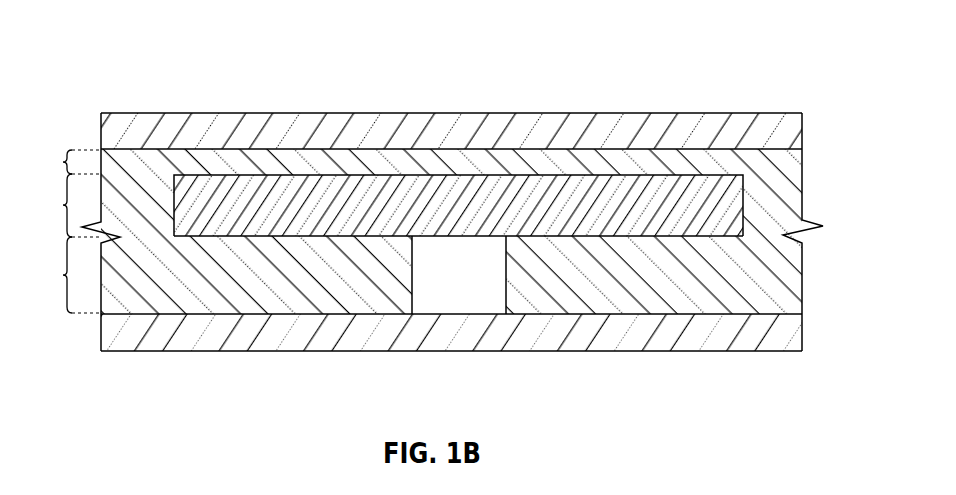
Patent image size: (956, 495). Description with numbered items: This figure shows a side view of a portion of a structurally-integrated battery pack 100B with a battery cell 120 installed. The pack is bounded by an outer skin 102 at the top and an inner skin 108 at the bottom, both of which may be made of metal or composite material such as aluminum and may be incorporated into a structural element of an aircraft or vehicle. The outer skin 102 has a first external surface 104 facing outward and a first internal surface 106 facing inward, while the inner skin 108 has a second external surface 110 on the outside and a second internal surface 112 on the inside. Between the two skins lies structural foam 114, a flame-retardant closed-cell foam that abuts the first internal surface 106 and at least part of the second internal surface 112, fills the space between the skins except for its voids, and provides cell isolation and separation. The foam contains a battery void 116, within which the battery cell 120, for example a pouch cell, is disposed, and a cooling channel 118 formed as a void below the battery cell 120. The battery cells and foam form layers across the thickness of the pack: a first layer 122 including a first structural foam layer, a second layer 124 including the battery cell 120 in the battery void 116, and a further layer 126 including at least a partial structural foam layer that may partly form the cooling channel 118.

The structurally-integrated battery pack 100B is at (117, 60).
The outer skin 102 is at (788, 130).
The first external surface 104 is at (675, 112).
The first internal surface 106 is at (748, 152).
The inner skin 108 is at (790, 330).
The second external surface 110 is at (728, 352).
The second internal surface 112 is at (658, 312).
The structural foam 114 is at (782, 277).
The battery void 116 is at (745, 237).
The cooling channel 118 is at (495, 277).
The battery cell 120 is at (607, 192).
The first layer 122 is at (63, 162).
The second layer 124 is at (61, 205).
The lower portion thickness 126 is at (60, 275).